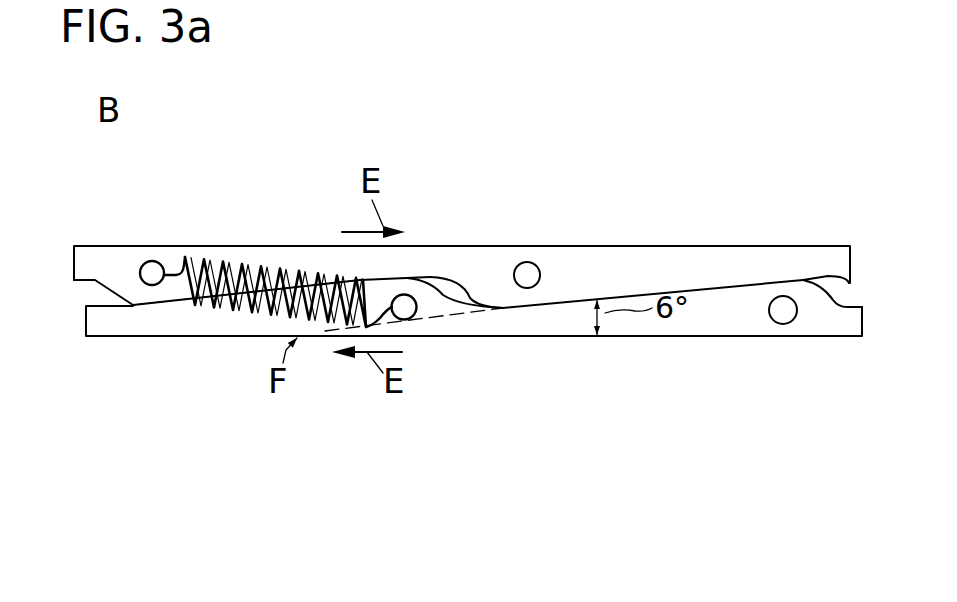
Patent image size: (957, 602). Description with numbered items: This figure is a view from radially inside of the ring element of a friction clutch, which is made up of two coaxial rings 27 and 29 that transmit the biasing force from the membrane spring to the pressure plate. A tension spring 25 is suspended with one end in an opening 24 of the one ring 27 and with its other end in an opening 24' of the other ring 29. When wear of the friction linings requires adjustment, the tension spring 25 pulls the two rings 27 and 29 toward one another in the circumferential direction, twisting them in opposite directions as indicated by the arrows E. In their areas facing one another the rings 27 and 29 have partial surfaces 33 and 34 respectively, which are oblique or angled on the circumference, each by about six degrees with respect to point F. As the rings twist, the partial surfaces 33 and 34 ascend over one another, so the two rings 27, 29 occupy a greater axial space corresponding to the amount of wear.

The opening 24 is at (136, 241).
The opening 24' is at (450, 348).
The tension spring 25 is at (243, 267).
The ring 27 is at (643, 277).
The ring 29 is at (637, 325).
The partial surface 33 is at (412, 272).
The partial surface 34 is at (165, 308).